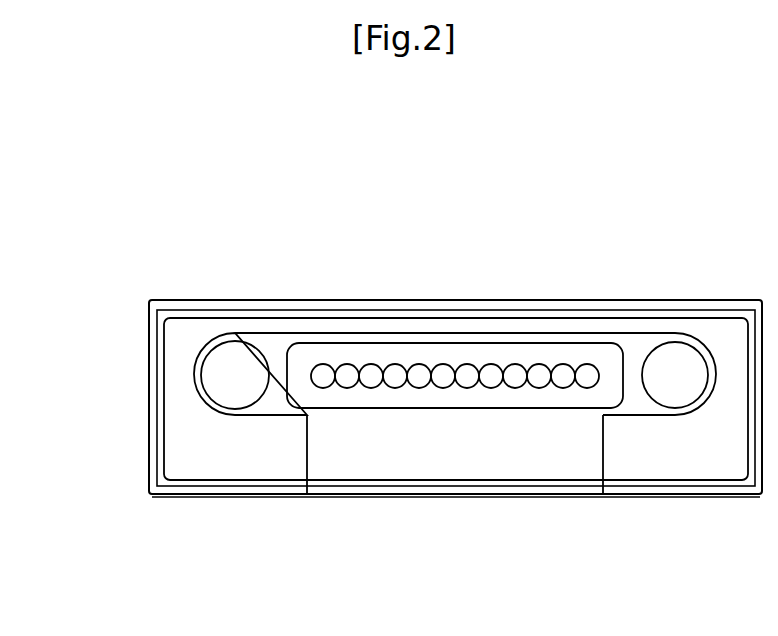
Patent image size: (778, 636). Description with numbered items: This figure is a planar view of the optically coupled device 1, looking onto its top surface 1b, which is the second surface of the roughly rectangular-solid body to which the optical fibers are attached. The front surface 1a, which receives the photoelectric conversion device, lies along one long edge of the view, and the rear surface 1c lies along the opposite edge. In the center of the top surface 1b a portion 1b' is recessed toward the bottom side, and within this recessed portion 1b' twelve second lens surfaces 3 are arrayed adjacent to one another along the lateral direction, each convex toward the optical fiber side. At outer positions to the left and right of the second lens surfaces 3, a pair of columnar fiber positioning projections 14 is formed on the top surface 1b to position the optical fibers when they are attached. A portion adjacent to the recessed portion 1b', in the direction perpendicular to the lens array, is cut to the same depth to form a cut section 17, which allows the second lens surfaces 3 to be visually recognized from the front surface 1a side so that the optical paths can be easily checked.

The optically coupled device 1 is at (145, 212).
The front surface 1a is at (252, 497).
The top surface 1b is at (383, 399).
The recessed portion 1b' is at (455, 321).
The rear surface 1c is at (570, 300).
The second lens surfaces 3 is at (418, 363).
The fiber positioning projections 14 is at (232, 343).
The cut section 17 is at (318, 466).